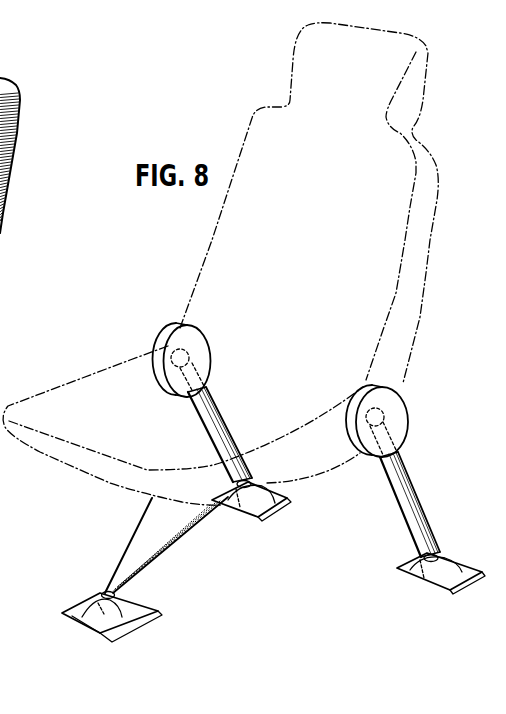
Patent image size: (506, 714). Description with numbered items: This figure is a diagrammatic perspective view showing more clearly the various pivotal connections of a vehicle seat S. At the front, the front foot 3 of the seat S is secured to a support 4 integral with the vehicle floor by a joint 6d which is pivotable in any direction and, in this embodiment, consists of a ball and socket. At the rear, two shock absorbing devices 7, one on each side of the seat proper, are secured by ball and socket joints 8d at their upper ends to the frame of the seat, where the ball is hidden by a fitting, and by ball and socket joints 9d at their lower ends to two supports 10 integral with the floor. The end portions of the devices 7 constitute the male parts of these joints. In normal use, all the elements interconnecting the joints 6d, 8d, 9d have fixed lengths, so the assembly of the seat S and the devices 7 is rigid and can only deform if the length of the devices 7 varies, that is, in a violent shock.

The seat S is at (206, 238).
The front foot 3 is at (162, 523).
The support 4 is at (147, 603).
The joint 6d is at (104, 593).
The shock absorbing device 7 is at (208, 410).
The ball and socket joint 8d is at (172, 346).
The ball and socket joint 9d is at (252, 480).
The support 10 is at (286, 498).